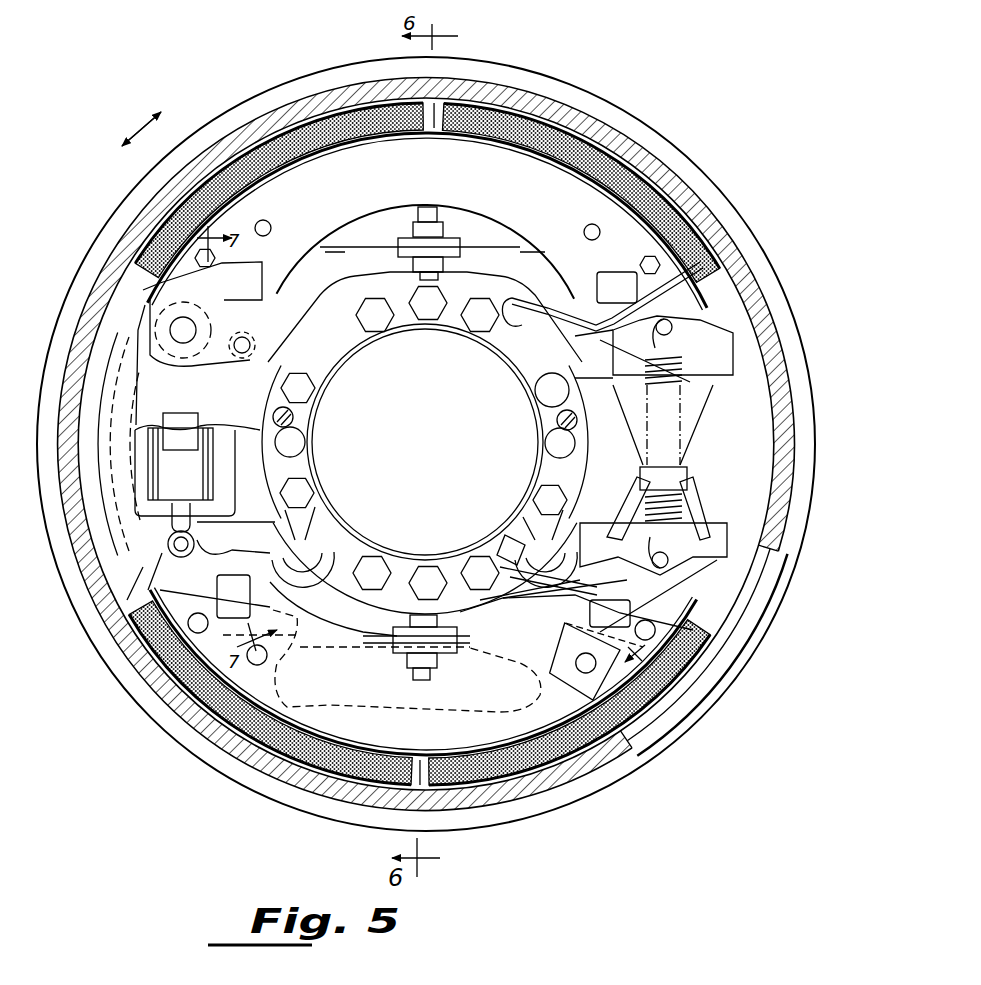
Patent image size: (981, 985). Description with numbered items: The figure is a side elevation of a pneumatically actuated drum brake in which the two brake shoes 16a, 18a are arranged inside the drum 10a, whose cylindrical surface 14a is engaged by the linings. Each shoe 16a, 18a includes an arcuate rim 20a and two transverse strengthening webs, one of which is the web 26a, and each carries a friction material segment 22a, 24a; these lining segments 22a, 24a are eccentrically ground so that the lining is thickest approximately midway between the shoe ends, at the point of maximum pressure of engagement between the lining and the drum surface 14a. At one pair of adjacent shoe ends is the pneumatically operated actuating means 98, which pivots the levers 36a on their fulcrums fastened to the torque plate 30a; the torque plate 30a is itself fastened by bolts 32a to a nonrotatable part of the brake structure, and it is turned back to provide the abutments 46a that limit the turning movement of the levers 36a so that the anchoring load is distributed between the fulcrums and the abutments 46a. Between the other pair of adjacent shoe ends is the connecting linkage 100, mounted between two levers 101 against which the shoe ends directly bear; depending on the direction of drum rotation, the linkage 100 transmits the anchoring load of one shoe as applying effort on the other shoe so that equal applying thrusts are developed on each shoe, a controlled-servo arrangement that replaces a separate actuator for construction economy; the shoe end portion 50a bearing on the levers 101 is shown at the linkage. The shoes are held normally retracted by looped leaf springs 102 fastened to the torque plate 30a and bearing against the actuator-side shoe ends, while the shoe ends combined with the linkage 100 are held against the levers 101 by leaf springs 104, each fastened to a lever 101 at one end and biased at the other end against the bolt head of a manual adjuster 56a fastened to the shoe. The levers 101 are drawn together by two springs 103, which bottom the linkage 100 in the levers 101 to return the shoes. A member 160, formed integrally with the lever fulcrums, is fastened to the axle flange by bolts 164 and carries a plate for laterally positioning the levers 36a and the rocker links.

The drum 10a is at (487, 56).
The primary brake shoe 14a is at (336, 112).
The brake shoe 16a is at (466, 187).
The brake shoe 18a is at (452, 743).
The arcuate rim 20a is at (572, 722).
The friction material segment 22a is at (243, 150).
The friction material segment 24a is at (597, 152).
The transverse strengthening web 26a is at (350, 208).
The torque plate 30a is at (415, 565).
The bolts 32a is at (430, 580).
The levers 36a is at (150, 590).
The abutments 46a is at (118, 535).
The adjuster strut 50a is at (613, 373).
The manual adjusters 56a is at (690, 697).
The pneumatically operated actuating means 98 is at (137, 330).
The connecting linkage 100 is at (694, 420).
The levers 101 is at (712, 330).
The looped leaf springs 102 is at (491, 248).
The springs 103 is at (688, 385).
The leaf springs 104 is at (550, 300).
The member 160 is at (318, 502).
The bolts 164 is at (295, 440).